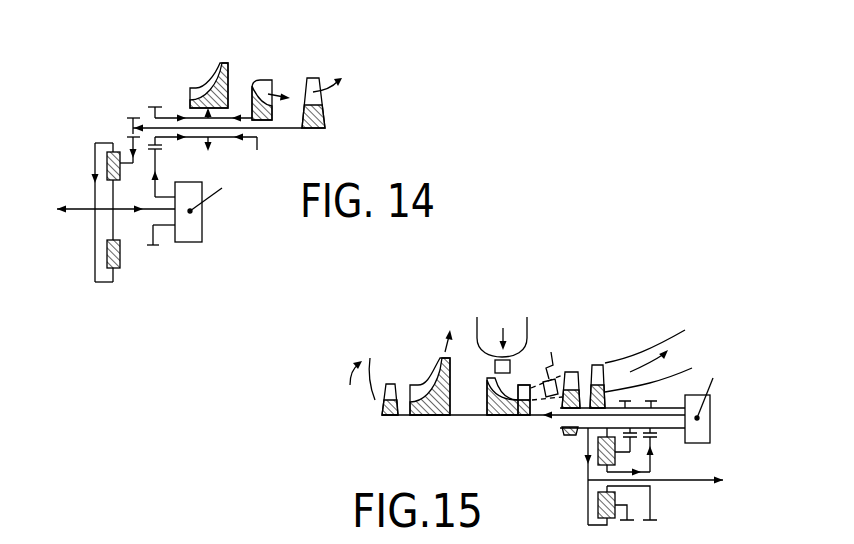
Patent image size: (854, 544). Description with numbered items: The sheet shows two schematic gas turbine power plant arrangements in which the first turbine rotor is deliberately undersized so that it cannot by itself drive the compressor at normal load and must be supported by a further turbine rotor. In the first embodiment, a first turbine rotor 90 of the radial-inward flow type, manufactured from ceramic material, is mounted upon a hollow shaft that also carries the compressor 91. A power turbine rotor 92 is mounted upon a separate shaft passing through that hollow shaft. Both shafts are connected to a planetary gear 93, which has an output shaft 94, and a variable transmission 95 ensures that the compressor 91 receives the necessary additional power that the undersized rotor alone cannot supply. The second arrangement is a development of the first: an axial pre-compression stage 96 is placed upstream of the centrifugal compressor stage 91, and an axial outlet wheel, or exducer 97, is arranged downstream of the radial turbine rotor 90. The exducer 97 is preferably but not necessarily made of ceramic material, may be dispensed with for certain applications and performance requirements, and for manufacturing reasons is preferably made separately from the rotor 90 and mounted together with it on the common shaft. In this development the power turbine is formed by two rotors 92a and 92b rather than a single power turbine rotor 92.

In FIG. 14, the first turbine rotor 90 is at (268, 86).
In FIG. 15, the first turbine rotor 90 is at (502, 415).
In FIG. 14, the compressor 91 is at (210, 85).
In FIG. 15, the compressor 91 is at (428, 415).
In FIG. 14, the power turbine rotor 92 is at (325, 107).
In FIG. 14, the planetary gear 93 is at (95, 152).
In FIG. 14, the output shaft 94 is at (72, 212).
In FIG. 14, the variable transmission 95 is at (192, 227).
In FIG. 15, the axial pre-compression stage 96 is at (382, 407).
In FIG. 15, the exducer 97 is at (527, 388).
In FIG. 15, the power turbine rotor 92a is at (571, 436).
In FIG. 15, the power turbine rotor 92b is at (692, 368).